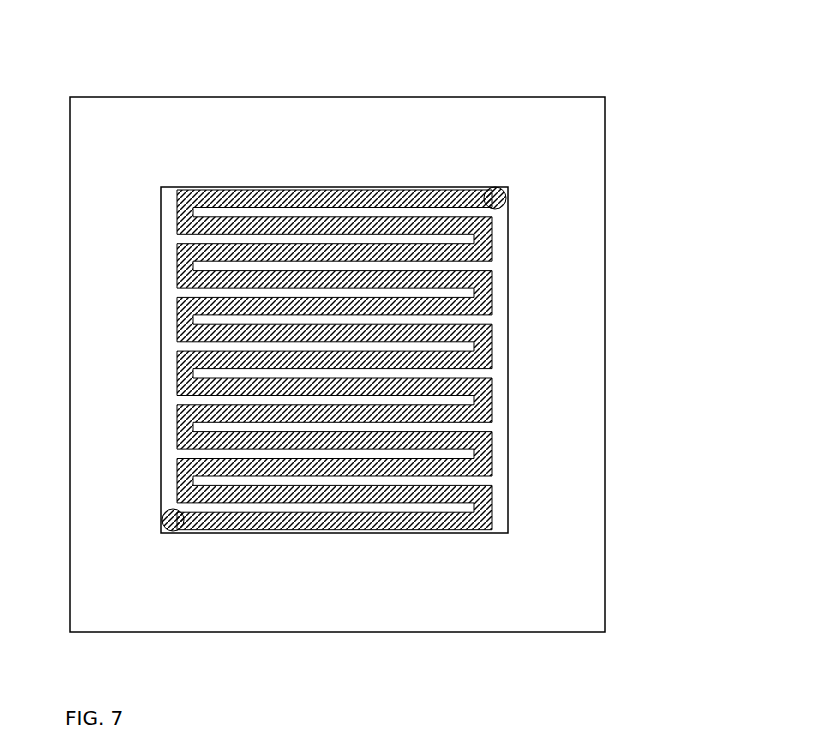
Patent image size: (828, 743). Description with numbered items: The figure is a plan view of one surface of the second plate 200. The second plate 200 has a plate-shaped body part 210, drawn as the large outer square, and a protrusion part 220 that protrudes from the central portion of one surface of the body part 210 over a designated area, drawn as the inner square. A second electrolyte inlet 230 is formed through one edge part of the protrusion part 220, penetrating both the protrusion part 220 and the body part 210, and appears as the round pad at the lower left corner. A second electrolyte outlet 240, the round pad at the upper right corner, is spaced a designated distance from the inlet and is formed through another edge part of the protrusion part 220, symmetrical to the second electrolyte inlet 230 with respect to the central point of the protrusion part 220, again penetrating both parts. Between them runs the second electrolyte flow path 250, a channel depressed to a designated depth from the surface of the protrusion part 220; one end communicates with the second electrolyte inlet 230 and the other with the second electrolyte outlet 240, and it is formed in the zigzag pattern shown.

The second plate 200 is at (133, 77).
The body part 210 is at (380, 118).
The protrusion part 220 is at (455, 185).
The second electrolyte inlet 230 is at (174, 526).
The second electrolyte outlet 240 is at (504, 200).
The second electrolyte flow path 250 is at (490, 293).